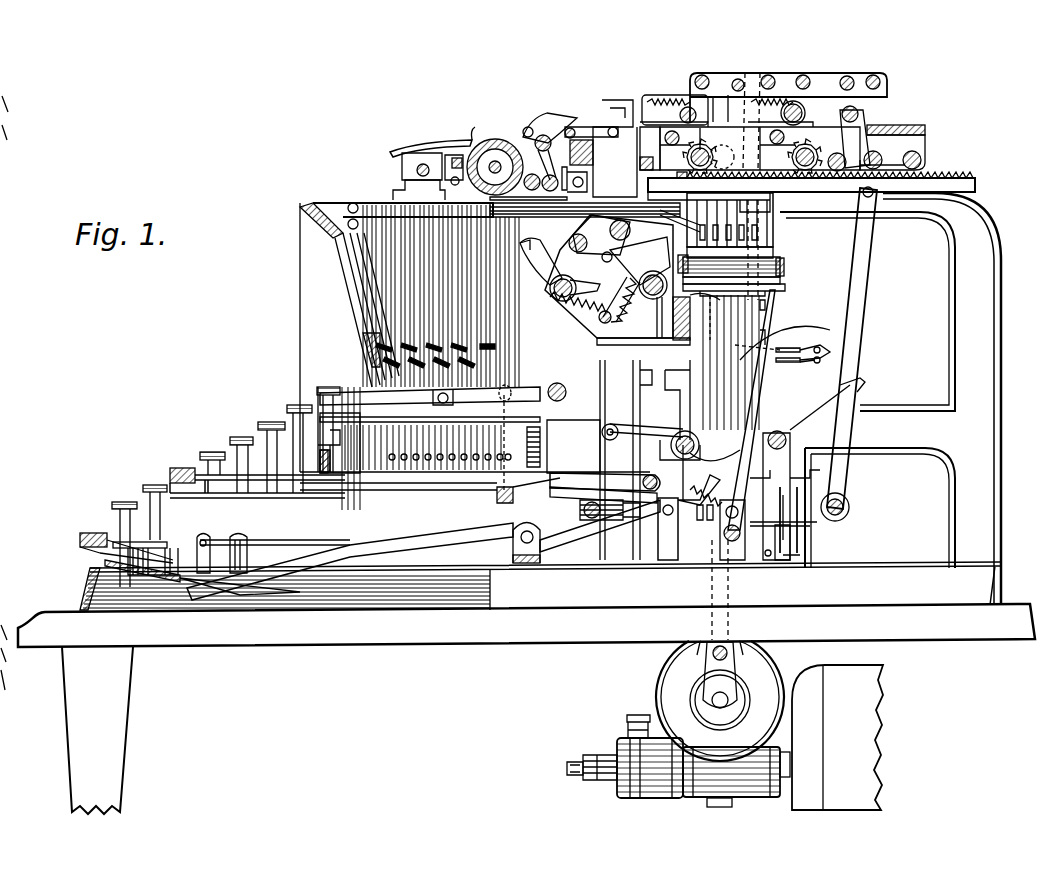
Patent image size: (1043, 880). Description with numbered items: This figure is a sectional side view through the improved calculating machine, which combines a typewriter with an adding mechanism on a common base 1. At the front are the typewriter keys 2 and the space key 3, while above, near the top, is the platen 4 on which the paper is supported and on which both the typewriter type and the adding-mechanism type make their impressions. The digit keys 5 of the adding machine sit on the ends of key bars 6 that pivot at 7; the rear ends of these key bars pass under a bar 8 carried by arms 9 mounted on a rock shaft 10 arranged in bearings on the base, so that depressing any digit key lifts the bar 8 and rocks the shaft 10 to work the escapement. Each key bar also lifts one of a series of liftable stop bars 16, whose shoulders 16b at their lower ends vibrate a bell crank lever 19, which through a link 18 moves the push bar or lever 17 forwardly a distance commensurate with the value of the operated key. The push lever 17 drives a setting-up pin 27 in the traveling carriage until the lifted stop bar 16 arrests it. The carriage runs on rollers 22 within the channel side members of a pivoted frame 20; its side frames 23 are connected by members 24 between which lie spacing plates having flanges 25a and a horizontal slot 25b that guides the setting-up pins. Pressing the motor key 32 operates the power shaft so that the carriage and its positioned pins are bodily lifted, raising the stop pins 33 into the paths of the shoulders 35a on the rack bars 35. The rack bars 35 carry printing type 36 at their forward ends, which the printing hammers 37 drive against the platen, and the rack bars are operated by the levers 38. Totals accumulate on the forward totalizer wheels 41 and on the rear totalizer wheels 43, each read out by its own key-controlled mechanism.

The base 1 is at (990, 587).
The typewriter keys 2 is at (317, 390).
The space key 3 is at (182, 468).
The platen 4 is at (483, 150).
The digit keys 5 is at (127, 502).
The key bars 6 is at (423, 545).
The pivot 7 is at (526, 543).
The bar 8 is at (701, 535).
The arms 9 is at (600, 526).
The rock shaft 10 is at (602, 515).
The liftable stop bars 16 is at (745, 342).
The shoulders 16b is at (812, 525).
The push bar or lever 17 is at (765, 398).
The link 18 is at (605, 457).
The bell crank lever 19 is at (645, 481).
The frame 20 is at (748, 267).
The rollers 22 is at (783, 273).
The traveling carriage side frames 23 is at (787, 286).
The members 24 is at (745, 257).
The flanges 25a is at (673, 303).
The slot 25b is at (643, 331).
The setting-up pin 27 is at (700, 293).
The motor key 32 is at (84, 534).
The stop pins 33 is at (687, 222).
The rack bars 35 is at (811, 184).
The shoulders 35a is at (772, 199).
The printing type 36 is at (609, 276).
The printing hammers 37 is at (561, 278).
The levers for operating the rack 38 is at (860, 355).
The forward totalizer wheels 41 is at (708, 148).
The rear totalizer wheels 43 is at (848, 118).